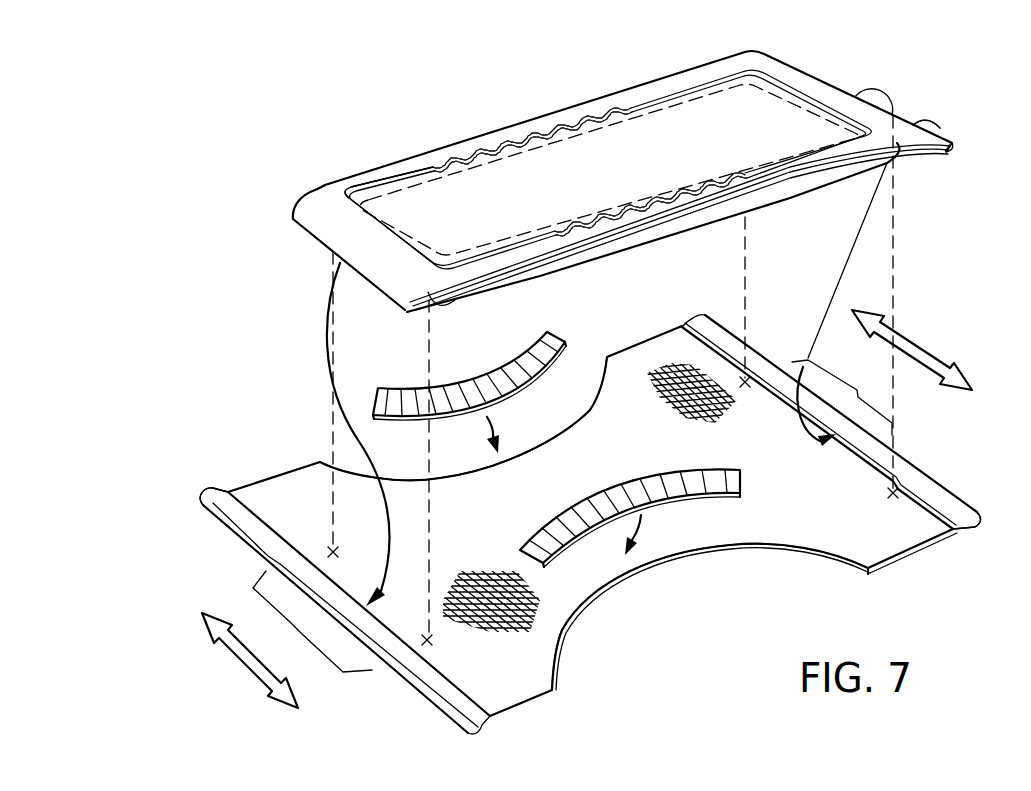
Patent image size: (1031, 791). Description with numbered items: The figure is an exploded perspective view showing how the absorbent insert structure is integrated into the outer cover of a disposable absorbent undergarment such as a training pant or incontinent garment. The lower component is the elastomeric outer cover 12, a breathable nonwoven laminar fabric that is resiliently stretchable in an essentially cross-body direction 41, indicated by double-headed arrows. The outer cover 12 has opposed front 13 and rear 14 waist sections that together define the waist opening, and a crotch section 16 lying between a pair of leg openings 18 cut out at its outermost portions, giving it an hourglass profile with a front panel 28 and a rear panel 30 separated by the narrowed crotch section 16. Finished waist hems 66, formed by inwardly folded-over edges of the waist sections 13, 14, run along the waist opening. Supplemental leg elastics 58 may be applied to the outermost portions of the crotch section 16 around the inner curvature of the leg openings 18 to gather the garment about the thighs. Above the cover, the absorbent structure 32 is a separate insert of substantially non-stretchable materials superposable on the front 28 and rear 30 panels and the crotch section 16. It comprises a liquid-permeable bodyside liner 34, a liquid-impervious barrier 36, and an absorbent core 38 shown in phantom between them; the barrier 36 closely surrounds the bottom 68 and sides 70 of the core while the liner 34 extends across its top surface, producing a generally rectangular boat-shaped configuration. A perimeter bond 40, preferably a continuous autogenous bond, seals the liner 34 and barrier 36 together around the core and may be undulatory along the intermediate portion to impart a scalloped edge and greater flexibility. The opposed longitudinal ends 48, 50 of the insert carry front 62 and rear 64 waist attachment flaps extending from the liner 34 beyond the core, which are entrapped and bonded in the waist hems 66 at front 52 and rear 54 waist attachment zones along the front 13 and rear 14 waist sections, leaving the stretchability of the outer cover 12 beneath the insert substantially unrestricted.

The outer cover 12 is at (857, 470).
The front waist section 13 is at (245, 542).
The rear waist section 14 is at (777, 362).
The crotch section 16 is at (697, 546).
The leg openings 18 is at (585, 400).
The front panel 28 is at (483, 560).
The rear panel 30 is at (773, 445).
The absorbent structure 32 is at (752, 91).
The bodyside liner 34 is at (395, 200).
The liquid-impervious barrier 36 is at (445, 302).
The absorbent core 38 is at (420, 176).
The perimeter bond 40 is at (433, 165).
The cross-body direction 41 is at (920, 343).
The longitudinal end of absorbent insert 48 is at (303, 242).
The longitudinal end of absorbent insert 50 is at (848, 85).
The front waist attachment zone 52 is at (288, 638).
The rear waist attachment zone 54 is at (856, 392).
The supplemental leg elastics 58 is at (500, 378).
The front waist attachment flap 62 is at (313, 210).
The rear waist attachment flap 64 is at (950, 130).
The waist hems 66 is at (230, 506).
The bottom of absorbent core 68 is at (645, 247).
The sides of absorbent core 70 is at (823, 184).